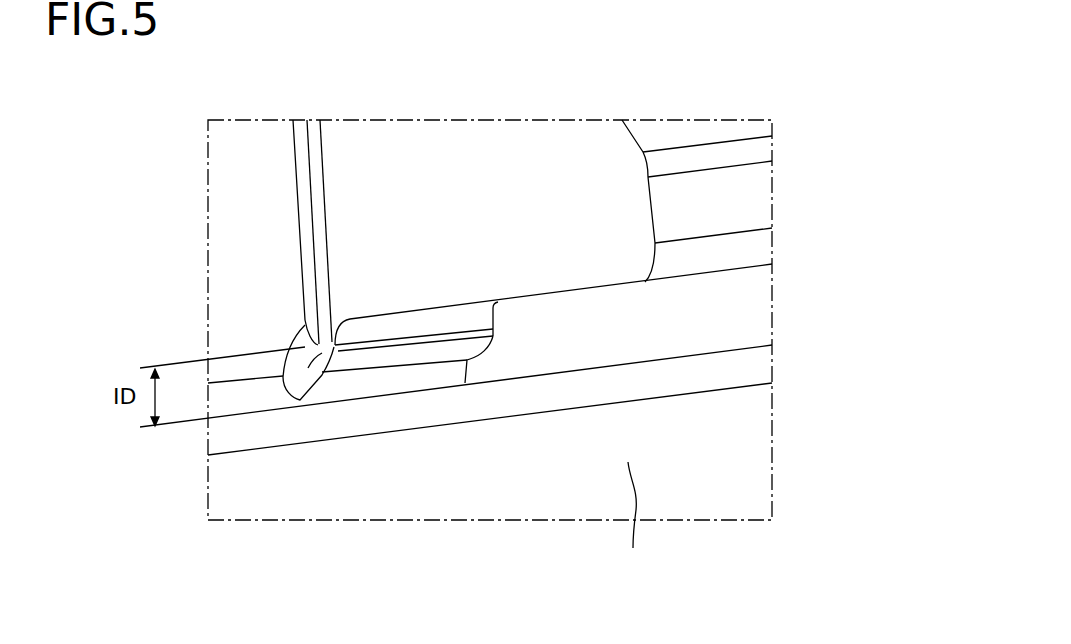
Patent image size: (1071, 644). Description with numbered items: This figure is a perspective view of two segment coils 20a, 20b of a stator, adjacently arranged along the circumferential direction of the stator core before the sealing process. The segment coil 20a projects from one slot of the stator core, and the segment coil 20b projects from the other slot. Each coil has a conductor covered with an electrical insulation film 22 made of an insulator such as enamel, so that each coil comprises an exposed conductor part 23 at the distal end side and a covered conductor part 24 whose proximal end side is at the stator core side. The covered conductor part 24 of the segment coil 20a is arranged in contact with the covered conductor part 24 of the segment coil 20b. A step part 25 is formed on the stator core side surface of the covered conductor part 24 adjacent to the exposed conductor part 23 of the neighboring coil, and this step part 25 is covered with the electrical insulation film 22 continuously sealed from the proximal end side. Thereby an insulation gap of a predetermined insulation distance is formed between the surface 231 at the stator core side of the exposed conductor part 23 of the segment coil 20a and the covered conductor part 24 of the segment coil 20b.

The segment coil 20a is at (206, 161).
The segment coil 20b is at (298, 524).
The electrical insulation film 22 is at (362, 340).
The exposed conductor part 23 is at (520, 185).
The covered conductor part 24 is at (268, 185).
The step part 25 is at (440, 363).
The surface 231 is at (568, 293).